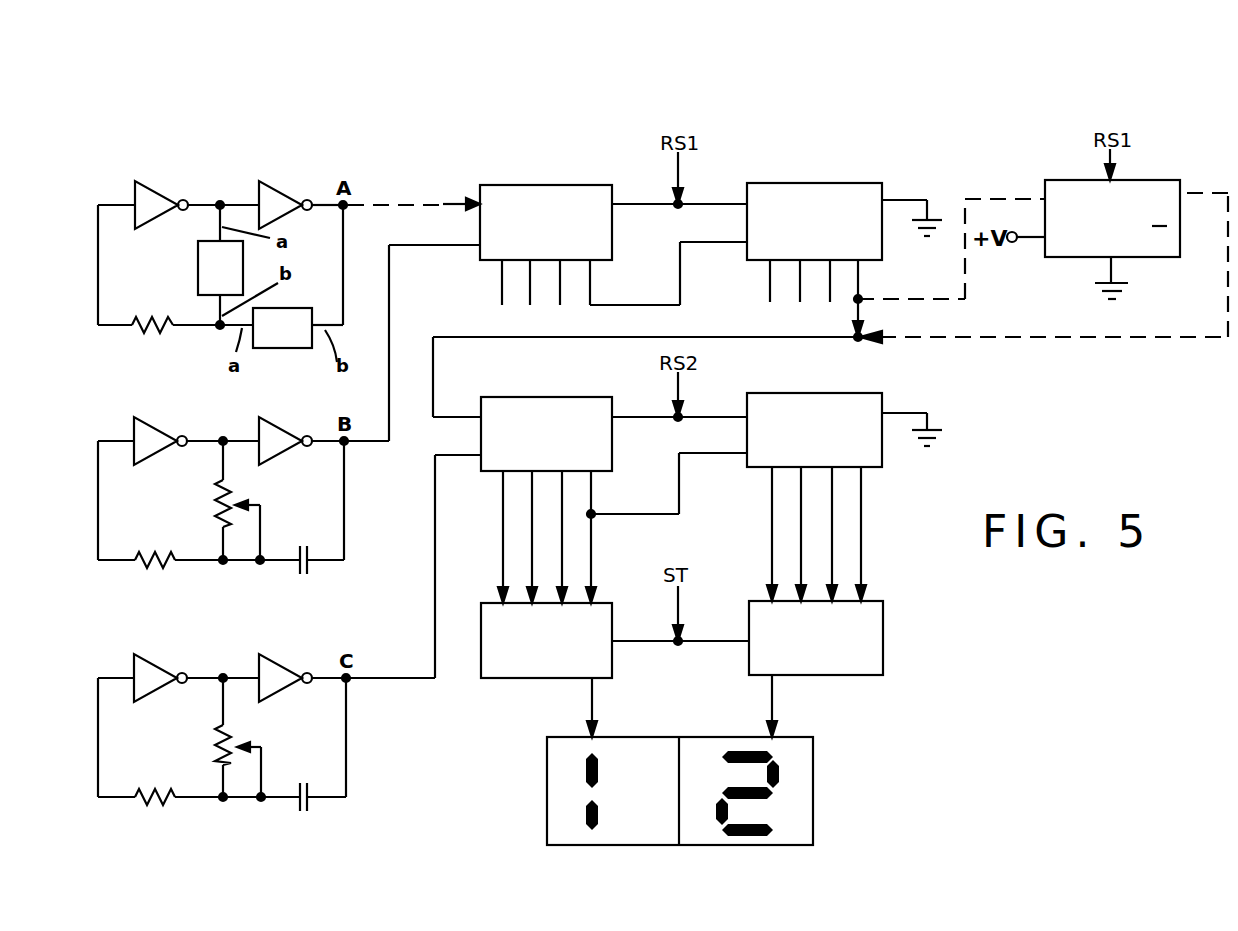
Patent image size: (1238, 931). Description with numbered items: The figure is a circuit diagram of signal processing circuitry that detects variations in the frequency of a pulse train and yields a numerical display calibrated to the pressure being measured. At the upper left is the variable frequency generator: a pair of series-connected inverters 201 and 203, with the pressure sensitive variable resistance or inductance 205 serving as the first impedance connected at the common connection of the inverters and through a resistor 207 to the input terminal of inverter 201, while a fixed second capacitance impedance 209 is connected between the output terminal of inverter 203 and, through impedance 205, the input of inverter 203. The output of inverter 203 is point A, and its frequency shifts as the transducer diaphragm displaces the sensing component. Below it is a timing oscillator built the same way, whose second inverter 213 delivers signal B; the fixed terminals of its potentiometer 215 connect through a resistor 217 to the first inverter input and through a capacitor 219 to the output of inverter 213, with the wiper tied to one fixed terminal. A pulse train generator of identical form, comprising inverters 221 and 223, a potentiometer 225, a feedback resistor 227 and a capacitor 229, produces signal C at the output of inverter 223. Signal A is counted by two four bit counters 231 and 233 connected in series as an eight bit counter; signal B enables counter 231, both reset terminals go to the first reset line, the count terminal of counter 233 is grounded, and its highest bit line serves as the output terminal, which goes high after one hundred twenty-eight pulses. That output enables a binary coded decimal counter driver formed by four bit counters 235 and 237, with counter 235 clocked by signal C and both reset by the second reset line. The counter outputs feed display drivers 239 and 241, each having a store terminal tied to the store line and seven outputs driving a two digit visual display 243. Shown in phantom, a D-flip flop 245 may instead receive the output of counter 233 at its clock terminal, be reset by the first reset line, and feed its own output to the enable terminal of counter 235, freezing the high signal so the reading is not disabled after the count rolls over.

The inverter 201 is at (168, 192).
The inverter 203 is at (282, 193).
The pressure sensitive variable resistance or inductance 205 is at (198, 263).
The resistor 207 is at (162, 338).
The fixed Z2 capacitance impedance 209 is at (290, 348).
The inverter 213 is at (257, 430).
The potentiometer 215 is at (218, 498).
The resistor 217 is at (162, 572).
The capacitor 219 is at (307, 568).
The inverter 221 is at (157, 660).
The inverter 223 is at (272, 655).
The potentiometer 225 is at (252, 732).
The feedback resistor 227 is at (162, 810).
The capacitor 229 is at (303, 813).
The four bit counter 231 is at (515, 185).
The four bit counter 233 is at (792, 182).
The four bit counter 235 is at (522, 396).
The four bit counter 237 is at (797, 392).
The display driver 239 is at (502, 682).
The display driver 241 is at (857, 678).
The two digit visual display 243 is at (640, 736).
The D-flip flop 245 is at (1148, 180).